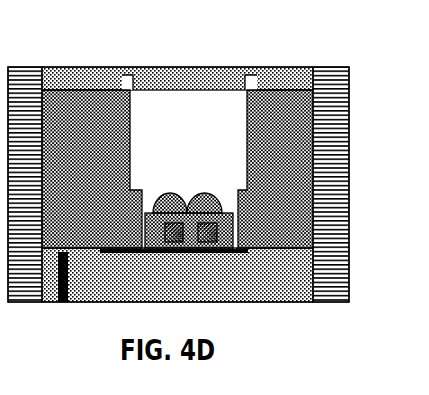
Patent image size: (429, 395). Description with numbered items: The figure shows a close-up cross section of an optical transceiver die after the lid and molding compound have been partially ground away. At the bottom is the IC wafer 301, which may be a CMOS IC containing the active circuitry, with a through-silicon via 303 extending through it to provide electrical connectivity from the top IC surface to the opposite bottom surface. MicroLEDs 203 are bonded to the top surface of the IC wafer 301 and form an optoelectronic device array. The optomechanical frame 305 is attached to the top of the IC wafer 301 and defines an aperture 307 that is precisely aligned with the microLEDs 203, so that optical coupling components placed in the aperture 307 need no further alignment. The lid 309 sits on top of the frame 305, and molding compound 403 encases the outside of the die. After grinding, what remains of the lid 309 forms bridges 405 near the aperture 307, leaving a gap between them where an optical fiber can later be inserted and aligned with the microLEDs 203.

The microLEDs 203 is at (195, 193).
The IC wafer 301 is at (290, 291).
The through-silicon vias 303 is at (68, 276).
The optomechanical frame 305 is at (102, 185).
The aperture 307 is at (205, 137).
The lid 309 is at (87, 65).
The molding compound 403 is at (348, 137).
The bridges 405 is at (258, 73).